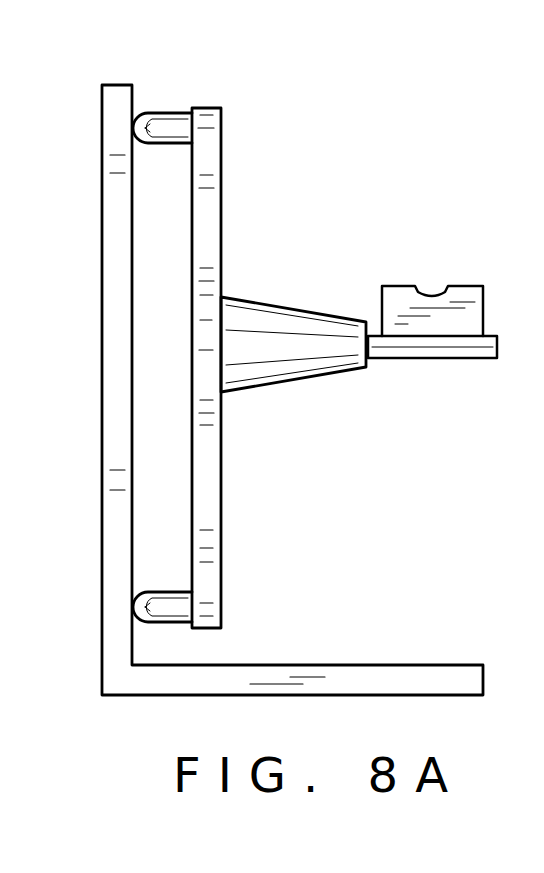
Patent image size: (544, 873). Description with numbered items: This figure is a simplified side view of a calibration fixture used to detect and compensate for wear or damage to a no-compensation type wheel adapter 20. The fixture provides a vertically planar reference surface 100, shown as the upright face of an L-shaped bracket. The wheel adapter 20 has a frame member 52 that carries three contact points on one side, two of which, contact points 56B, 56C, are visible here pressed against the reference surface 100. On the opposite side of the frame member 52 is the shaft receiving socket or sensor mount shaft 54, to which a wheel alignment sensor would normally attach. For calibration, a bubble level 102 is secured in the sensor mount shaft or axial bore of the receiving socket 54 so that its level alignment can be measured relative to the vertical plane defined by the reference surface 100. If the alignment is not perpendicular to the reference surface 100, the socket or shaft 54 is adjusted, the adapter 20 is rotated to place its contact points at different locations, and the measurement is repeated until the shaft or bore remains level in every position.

The reference surface 100 is at (137, 92).
The contact point 56B is at (171, 118).
The contact point 56C is at (173, 613).
The frame member 52 is at (222, 473).
The no-compensation type wheel adapter 20 is at (242, 217).
The shaft receiving socket or sensor mount shaft 54 is at (372, 336).
The bubble level 102 is at (470, 308).